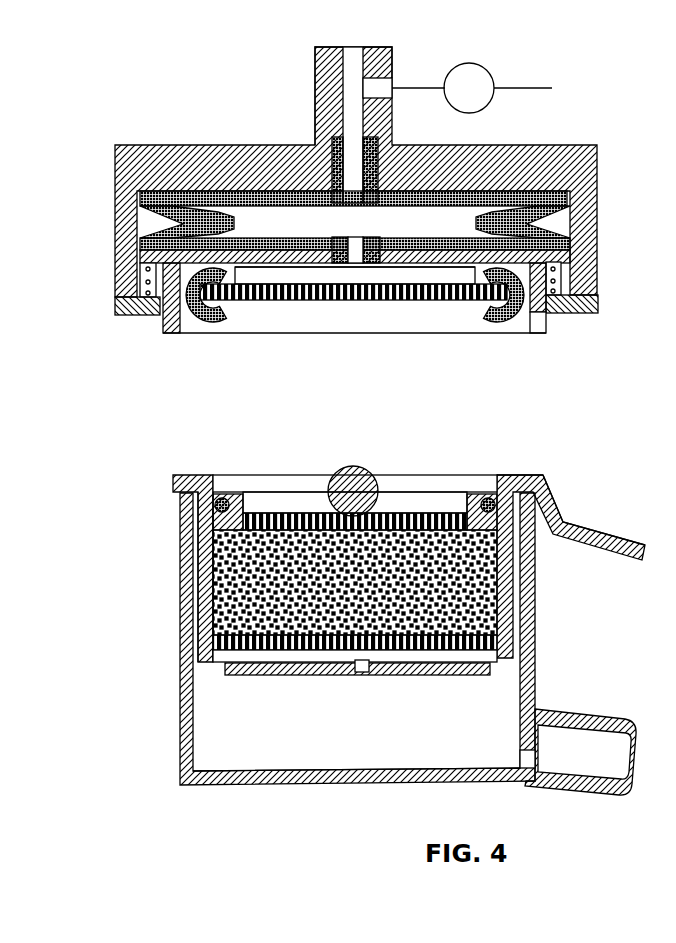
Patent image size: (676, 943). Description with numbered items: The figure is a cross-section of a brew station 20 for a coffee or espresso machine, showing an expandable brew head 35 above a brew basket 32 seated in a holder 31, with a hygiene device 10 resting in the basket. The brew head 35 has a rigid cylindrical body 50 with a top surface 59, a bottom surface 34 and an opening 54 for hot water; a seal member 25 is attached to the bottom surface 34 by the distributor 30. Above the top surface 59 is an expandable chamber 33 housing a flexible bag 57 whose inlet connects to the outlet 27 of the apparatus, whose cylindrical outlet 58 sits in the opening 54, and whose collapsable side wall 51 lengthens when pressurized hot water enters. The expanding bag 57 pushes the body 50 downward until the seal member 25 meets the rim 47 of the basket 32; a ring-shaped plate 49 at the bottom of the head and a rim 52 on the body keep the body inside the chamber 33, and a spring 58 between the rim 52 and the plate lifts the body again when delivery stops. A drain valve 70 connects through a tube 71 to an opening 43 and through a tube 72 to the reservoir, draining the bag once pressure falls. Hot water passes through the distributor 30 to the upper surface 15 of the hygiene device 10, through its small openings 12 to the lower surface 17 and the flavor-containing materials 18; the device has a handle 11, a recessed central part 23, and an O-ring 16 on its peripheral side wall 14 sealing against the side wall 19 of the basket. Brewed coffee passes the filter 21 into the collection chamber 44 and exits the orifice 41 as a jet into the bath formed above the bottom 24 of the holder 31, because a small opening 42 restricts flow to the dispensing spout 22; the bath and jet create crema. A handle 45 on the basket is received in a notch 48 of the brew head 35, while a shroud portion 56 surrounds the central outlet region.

The hygiene device 10 is at (327, 490).
The handle 11 is at (355, 468).
The small openings 12 is at (445, 514).
The peripheral side wall 14 is at (205, 520).
The upper surface 15 is at (272, 514).
The O-ring 16 is at (222, 497).
The lower surface 17 is at (215, 546).
The flavor-containing materials 18 is at (215, 576).
The side wall 19 is at (207, 620).
The brew station 20 is at (128, 108).
The filter 21 is at (436, 650).
The dispensing spout 22 is at (590, 740).
The central part 23 is at (400, 505).
The bottom 24 is at (335, 772).
The seal member 25 is at (207, 320).
The outlet 27 is at (318, 92).
The distributor 30 is at (252, 300).
The holder 31 is at (540, 605).
The brew basket 32 is at (262, 680).
The expandable chamber 33 is at (560, 220).
The bottom surface 34 is at (300, 270).
The brew head 35 is at (600, 185).
The orifice 41 is at (358, 670).
The opening 42 is at (518, 752).
The opening 43 is at (380, 46).
The collection chamber 44 is at (385, 667).
The handle 45 is at (598, 533).
The rim 47 is at (530, 476).
The notch 48 is at (541, 322).
The ring-shaped plate 49 is at (130, 312).
The rigid cylindrical body 50 is at (552, 278).
The collapsable side wall 51 is at (140, 210).
The rim 52 is at (140, 250).
The opening 54 is at (382, 265).
The insulator 56 is at (330, 160).
The flexible bag 57 is at (265, 192).
The spring 58 is at (356, 247).
The top surface 59 is at (326, 270).
The drain valve 70 is at (488, 66).
The tube 71 is at (432, 86).
The tube 72 is at (537, 86).